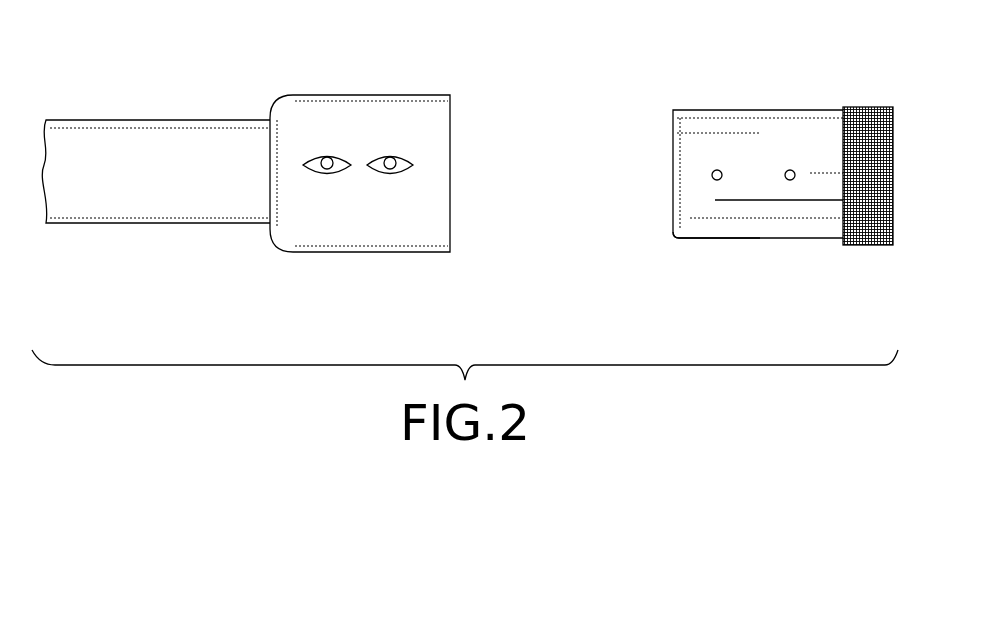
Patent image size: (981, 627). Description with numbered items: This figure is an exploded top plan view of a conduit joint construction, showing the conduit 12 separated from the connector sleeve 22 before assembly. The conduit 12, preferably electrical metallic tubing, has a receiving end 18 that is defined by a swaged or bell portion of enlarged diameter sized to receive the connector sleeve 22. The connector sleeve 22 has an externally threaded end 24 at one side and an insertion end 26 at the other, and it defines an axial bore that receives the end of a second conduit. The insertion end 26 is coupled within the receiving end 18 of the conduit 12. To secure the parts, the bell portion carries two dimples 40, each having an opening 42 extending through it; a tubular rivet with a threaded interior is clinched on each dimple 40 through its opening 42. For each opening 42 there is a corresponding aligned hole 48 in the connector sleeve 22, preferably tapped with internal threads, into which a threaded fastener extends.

The conduit 12 is at (145, 120).
The receiving end 18 is at (275, 243).
The opening 42 is at (390, 154).
The dimple 40 is at (390, 176).
The connector sleeve 22 is at (788, 110).
The externally threaded end 24 is at (870, 107).
The hole 48 is at (790, 170).
The insertion end 26 is at (675, 242).